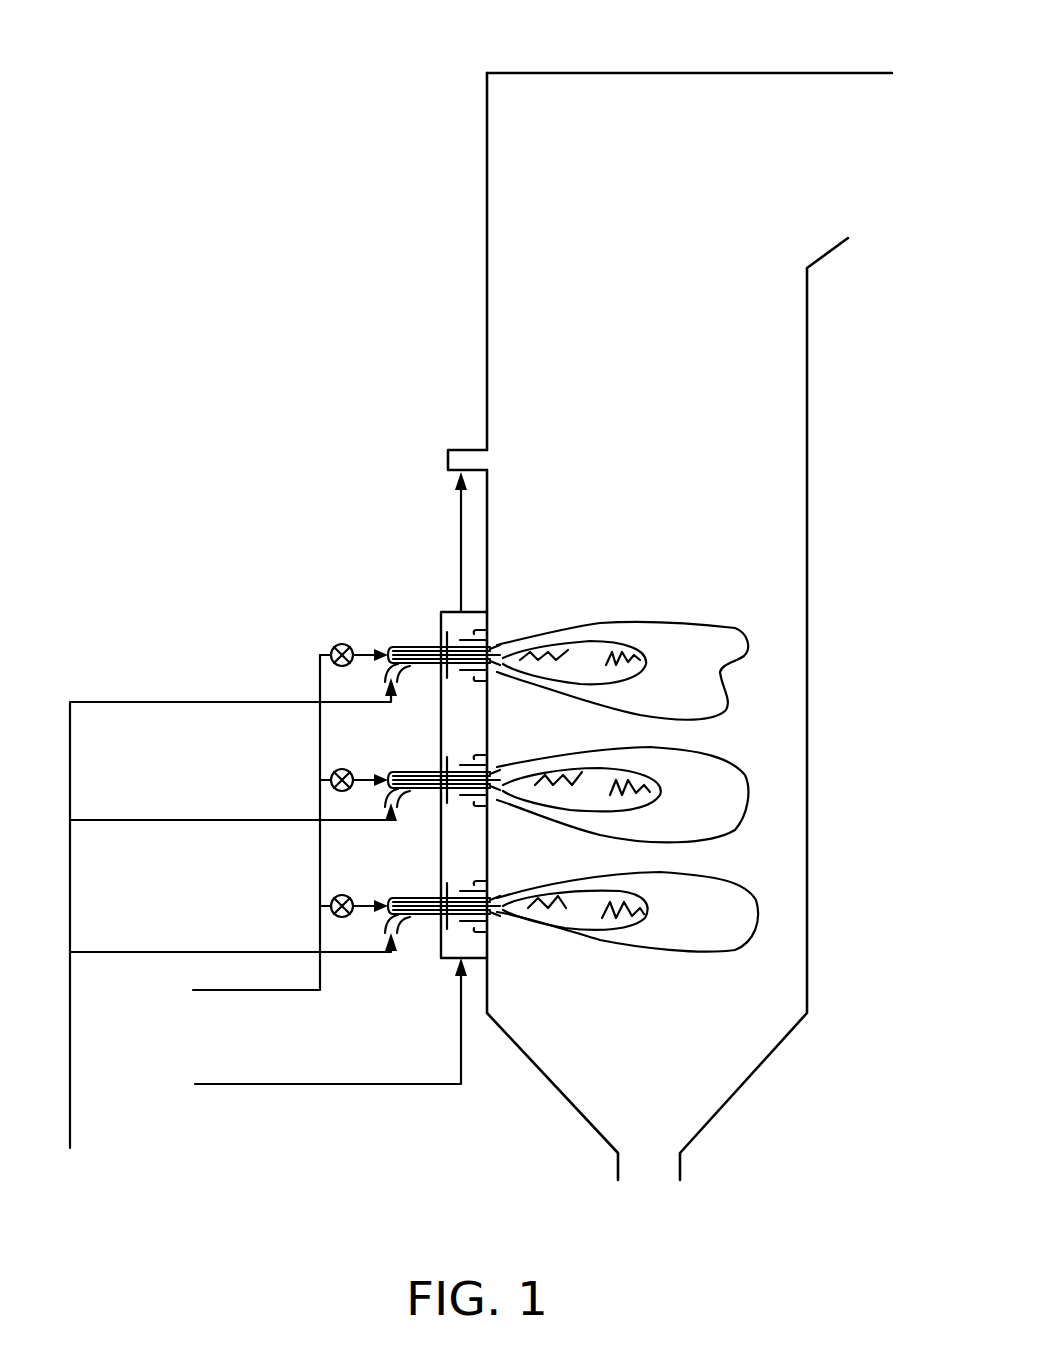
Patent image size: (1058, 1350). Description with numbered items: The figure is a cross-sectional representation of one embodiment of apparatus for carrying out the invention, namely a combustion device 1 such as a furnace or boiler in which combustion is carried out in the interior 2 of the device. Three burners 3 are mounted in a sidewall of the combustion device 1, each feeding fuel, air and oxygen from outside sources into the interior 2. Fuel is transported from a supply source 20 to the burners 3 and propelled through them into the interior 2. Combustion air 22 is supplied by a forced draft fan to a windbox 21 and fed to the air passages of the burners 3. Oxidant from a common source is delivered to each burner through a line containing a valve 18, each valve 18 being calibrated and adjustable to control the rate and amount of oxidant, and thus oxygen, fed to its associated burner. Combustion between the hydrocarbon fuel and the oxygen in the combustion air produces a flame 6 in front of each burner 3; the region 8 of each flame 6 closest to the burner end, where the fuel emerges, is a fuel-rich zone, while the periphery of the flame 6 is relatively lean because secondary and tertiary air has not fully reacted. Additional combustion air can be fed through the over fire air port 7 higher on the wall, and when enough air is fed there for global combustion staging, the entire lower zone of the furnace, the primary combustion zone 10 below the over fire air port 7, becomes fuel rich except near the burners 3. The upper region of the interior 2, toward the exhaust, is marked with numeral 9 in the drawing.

The combustion device 1 is at (704, 73).
The interior 2 is at (536, 571).
The burner 3 is at (442, 647).
The flame 6 is at (720, 680).
The over fire air port 7 is at (470, 448).
The region of the flame 8 is at (592, 671).
The upper furnace zone 9 is at (668, 407).
The primary combustion zone 10 is at (765, 591).
The valve 18 is at (339, 643).
The supply source 20 is at (226, 917).
The windbox 21 is at (441, 830).
The combustion air 22 is at (331, 793).